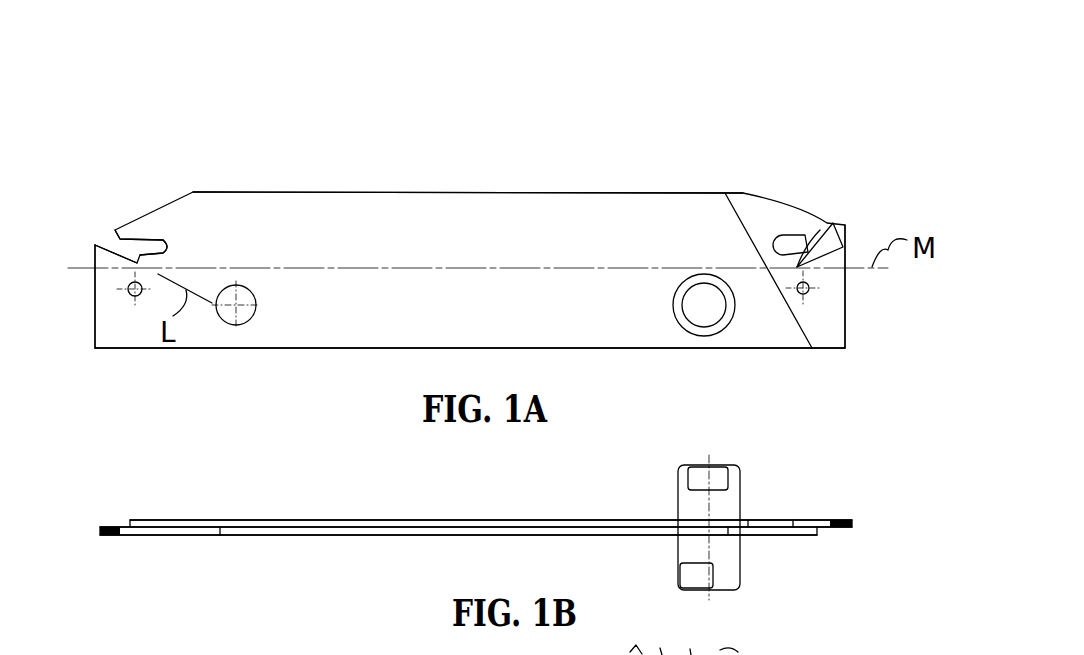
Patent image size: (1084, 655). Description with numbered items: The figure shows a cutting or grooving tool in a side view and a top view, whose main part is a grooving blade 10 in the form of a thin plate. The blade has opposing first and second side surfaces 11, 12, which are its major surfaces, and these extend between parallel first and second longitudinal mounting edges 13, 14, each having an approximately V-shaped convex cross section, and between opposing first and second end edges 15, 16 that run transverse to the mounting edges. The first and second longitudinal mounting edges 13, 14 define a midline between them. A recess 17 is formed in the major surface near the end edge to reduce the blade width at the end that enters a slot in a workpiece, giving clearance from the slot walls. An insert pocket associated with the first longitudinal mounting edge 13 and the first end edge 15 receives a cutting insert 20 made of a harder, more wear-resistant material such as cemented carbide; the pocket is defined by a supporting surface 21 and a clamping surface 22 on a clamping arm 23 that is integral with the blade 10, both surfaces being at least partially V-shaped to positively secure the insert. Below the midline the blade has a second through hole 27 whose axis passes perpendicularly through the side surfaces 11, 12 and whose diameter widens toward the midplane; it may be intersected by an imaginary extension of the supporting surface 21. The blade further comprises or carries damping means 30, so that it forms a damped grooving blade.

In FIG. 1A, the grooving blade 10 is at (535, 142).
In FIG. 1B, the grooving blade 10 is at (380, 558).
In FIG. 1A, the first side surface 11 is at (450, 285).
In FIG. 1B, the first side surface 11 is at (597, 535).
In FIG. 1B, the second side surface 12 is at (572, 520).
In FIG. 1A, the first longitudinal mounting edge 13 is at (390, 192).
In FIG. 1B, the first longitudinal mounting edge 13 is at (370, 525).
In FIG. 1A, the second longitudinal mounting edge 14 is at (317, 349).
In FIG. 1A, the first end edge 15 is at (847, 293).
In FIG. 1A, the second end edge 16 is at (95, 293).
In FIG. 1A, the recess 17 is at (822, 313).
In FIG. 1A, the cutting insert 20 is at (852, 227).
In FIG. 1A, the supporting surface 21 is at (95, 243).
In FIG. 1A, the clamping surface 22 is at (113, 238).
In FIG. 1A, the clamping arm 23 is at (145, 227).
In FIG. 1A, the second through hole 27 is at (247, 317).
In FIG. 1A, the damping means 30 is at (730, 323).
In FIG. 1B, the damping means 30 is at (755, 572).